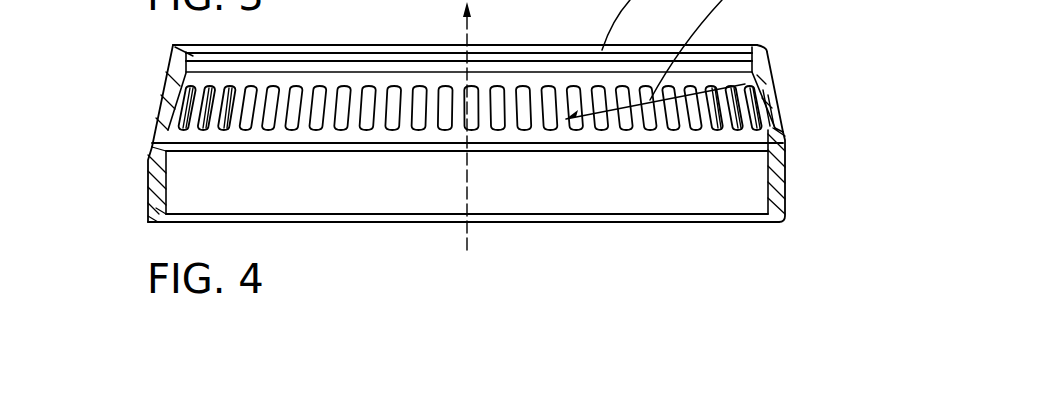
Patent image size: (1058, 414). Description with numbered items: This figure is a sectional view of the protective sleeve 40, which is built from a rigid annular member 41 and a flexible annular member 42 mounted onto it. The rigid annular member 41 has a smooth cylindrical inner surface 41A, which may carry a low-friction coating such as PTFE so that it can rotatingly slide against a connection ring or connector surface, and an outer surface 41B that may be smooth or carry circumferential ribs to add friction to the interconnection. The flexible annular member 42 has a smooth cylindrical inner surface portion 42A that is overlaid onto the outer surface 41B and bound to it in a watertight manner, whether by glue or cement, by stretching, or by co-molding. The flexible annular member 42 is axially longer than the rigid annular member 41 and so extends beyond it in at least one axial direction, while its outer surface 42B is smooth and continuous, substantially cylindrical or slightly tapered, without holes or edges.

The sleeve 40 is at (110, 188).
The rigid annular member 41 is at (675, 192).
The cylindrical inner surface 41A is at (603, 195).
The outer surface 41B is at (153, 197).
The flexible annular member 42 is at (794, 103).
The smooth cylindrical inner surface portion 42A is at (768, 197).
The outer surface 42B is at (790, 127).